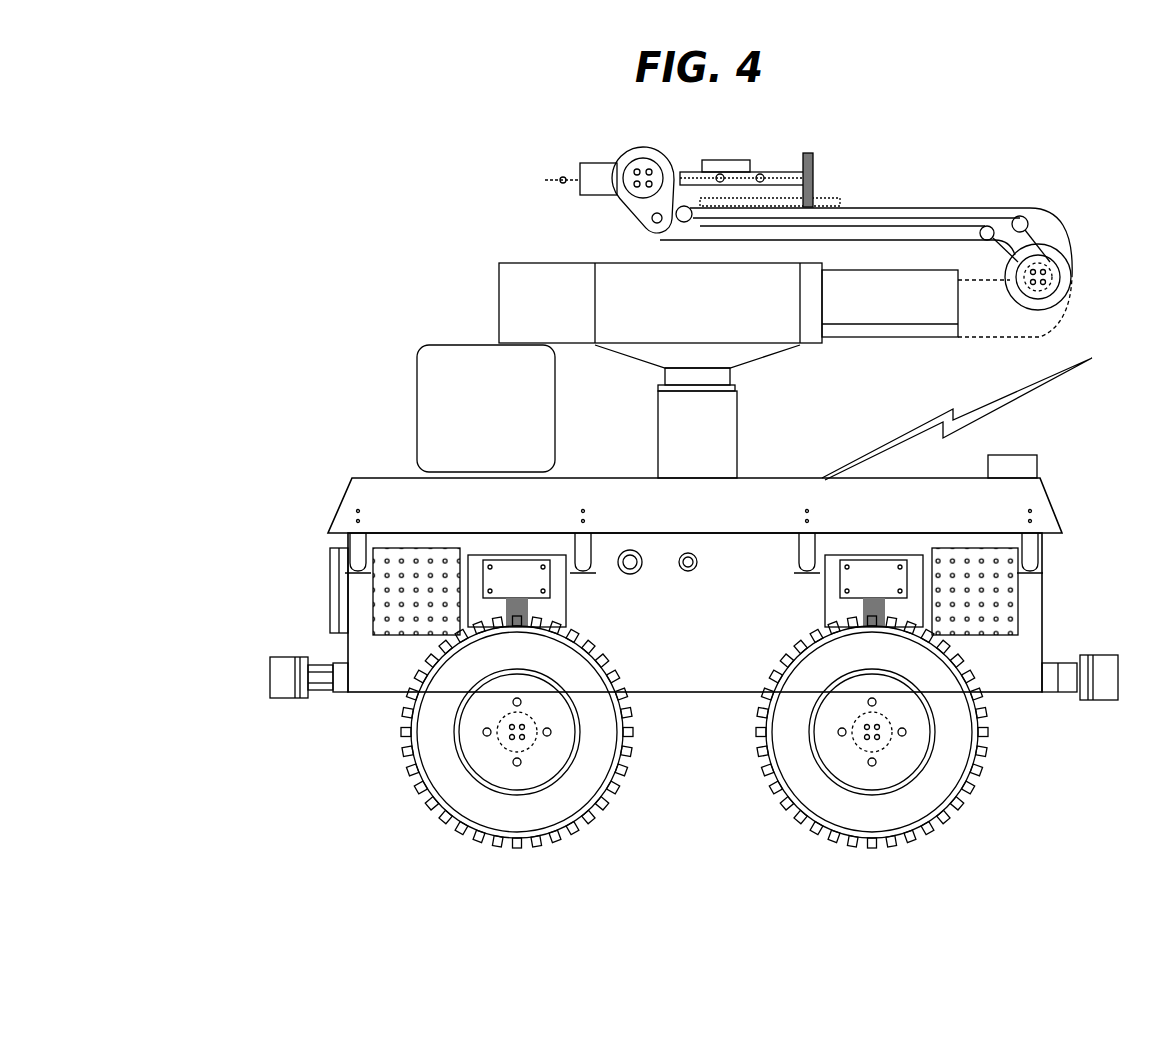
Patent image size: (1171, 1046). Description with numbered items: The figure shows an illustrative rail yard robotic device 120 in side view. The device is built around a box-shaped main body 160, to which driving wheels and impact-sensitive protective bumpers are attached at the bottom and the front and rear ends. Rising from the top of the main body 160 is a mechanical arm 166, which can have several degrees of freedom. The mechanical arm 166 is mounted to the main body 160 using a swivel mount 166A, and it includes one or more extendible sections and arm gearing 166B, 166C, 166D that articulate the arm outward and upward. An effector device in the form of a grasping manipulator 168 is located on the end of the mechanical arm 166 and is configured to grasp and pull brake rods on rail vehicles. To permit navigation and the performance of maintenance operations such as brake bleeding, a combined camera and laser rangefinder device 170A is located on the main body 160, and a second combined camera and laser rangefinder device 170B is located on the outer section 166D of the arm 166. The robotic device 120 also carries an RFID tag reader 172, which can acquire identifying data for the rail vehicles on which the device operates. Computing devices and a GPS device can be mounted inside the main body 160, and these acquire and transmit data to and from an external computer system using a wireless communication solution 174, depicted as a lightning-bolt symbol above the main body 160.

The rail yard robotic device 120 is at (280, 236).
The main body 160 is at (713, 626).
The mechanical arm 166 is at (828, 297).
The swivel mount 166A is at (724, 426).
The arm gearing section 166B is at (1019, 314).
The arm gearing section 166C is at (890, 208).
The arm section 166D is at (702, 168).
The grasping manipulator 168 is at (808, 182).
The combined camera and laser rangefinder device 170A is at (1020, 458).
The second combined camera and laser rangefinder device 170B is at (730, 168).
The RFID tag reader 172 is at (503, 414).
The wireless communication solution 174 is at (995, 410).